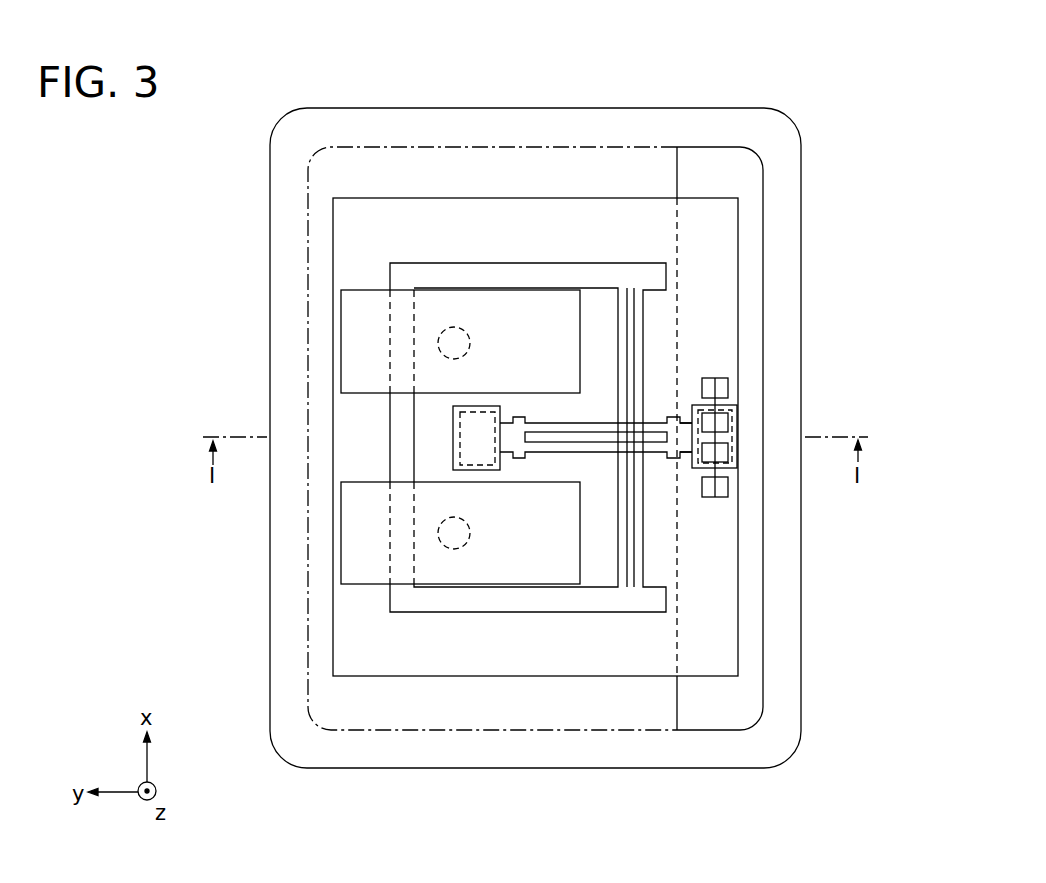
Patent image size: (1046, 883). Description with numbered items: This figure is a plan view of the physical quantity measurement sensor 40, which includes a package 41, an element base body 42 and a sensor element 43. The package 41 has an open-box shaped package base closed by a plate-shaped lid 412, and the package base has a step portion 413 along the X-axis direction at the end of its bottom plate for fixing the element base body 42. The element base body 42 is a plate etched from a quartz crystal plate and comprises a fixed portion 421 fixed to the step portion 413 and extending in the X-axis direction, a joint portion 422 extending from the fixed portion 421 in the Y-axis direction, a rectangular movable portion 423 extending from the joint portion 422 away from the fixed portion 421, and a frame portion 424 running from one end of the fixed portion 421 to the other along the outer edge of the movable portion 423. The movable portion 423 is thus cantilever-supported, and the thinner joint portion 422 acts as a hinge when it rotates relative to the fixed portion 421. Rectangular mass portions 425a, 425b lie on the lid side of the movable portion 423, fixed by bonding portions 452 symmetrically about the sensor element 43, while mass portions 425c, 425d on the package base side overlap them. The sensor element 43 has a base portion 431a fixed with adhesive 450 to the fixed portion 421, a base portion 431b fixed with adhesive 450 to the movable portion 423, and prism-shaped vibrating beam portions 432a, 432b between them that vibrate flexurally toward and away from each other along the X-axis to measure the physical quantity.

The physical quantity measurement sensor 40 is at (818, 58).
The package 41 is at (755, 100).
The element base body 42 is at (605, 188).
The sensor element 43 is at (599, 412).
The lid 412 is at (492, 732).
The step portion 413 is at (738, 708).
The fixed portion 421 is at (722, 340).
The joint portion 422 is at (629, 316).
The movable portion 423 is at (598, 313).
The frame portion 424 is at (541, 235).
The mass portion 425a is at (353, 318).
The mass portion 425b is at (353, 563).
The mass portion 425c is at (375, 341).
The mass portion 425d is at (374, 544).
The base portion 431a is at (687, 438).
The base portion 431b is at (453, 427).
The vibrating beam portion 432a is at (547, 453).
The vibrating beam portion 432b is at (547, 422).
The adhesive 450 is at (447, 458).
The bonding portion 452 is at (470, 343).